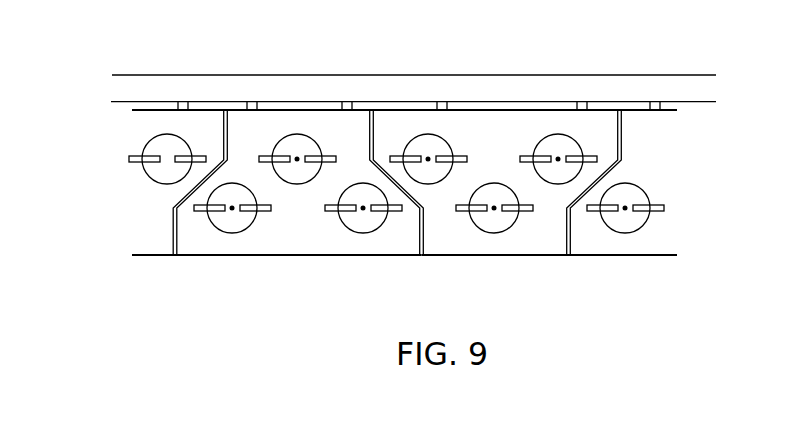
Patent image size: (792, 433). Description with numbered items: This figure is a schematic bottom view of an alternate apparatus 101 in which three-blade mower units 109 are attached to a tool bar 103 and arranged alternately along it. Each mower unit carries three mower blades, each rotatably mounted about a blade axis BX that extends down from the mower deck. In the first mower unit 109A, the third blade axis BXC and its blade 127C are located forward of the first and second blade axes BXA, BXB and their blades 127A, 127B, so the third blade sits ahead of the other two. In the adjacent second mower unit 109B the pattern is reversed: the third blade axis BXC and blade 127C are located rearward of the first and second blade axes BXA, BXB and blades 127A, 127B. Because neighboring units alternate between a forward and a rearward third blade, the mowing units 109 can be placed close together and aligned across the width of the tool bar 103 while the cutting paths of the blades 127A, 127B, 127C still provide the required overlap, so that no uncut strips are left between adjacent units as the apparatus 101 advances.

The alternate apparatus 101 is at (703, 44).
The tool bar 103 is at (342, 74).
The mower units 109 is at (404, 214).
The first mower unit 109A is at (387, 256).
The second mower unit 109B is at (553, 256).
The first blade 127A is at (443, 137).
The second blade 127B is at (577, 142).
The third blade 127C is at (282, 137).
The blade axis BX is at (625, 208).
The first blade axis BXA is at (428, 159).
The second blade axis BXB is at (558, 159).
The third blade axis BXC is at (297, 159).